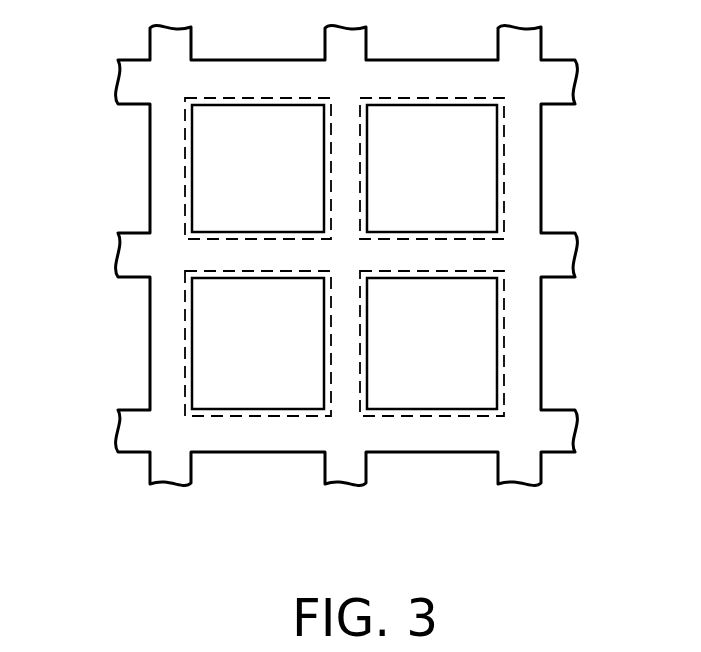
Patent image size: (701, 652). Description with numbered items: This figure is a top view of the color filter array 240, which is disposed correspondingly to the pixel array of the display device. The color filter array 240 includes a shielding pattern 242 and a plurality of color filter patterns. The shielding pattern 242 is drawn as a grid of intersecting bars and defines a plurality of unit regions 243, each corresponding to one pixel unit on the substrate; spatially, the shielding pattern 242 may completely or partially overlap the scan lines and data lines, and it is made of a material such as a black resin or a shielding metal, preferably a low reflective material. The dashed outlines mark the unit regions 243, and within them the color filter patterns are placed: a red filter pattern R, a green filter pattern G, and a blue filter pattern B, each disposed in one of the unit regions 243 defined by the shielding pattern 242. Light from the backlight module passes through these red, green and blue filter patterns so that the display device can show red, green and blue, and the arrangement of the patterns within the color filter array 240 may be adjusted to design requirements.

The color filter array 240 is at (335, 305).
The shielding pattern 242 is at (168, 43).
The unit region 243 is at (185, 138).